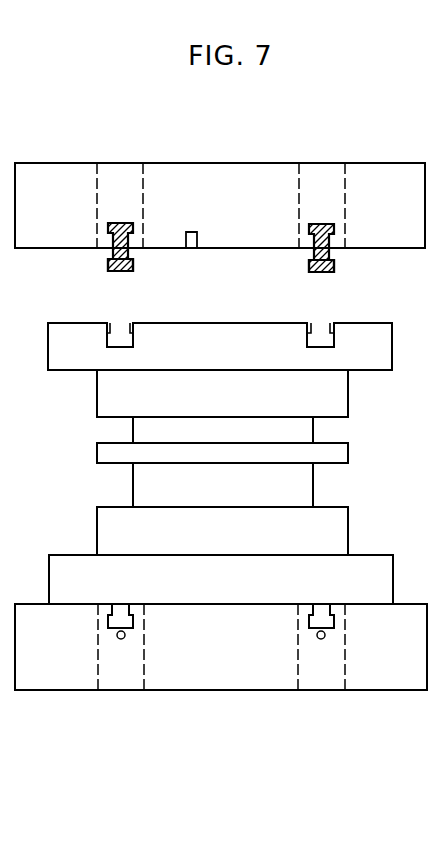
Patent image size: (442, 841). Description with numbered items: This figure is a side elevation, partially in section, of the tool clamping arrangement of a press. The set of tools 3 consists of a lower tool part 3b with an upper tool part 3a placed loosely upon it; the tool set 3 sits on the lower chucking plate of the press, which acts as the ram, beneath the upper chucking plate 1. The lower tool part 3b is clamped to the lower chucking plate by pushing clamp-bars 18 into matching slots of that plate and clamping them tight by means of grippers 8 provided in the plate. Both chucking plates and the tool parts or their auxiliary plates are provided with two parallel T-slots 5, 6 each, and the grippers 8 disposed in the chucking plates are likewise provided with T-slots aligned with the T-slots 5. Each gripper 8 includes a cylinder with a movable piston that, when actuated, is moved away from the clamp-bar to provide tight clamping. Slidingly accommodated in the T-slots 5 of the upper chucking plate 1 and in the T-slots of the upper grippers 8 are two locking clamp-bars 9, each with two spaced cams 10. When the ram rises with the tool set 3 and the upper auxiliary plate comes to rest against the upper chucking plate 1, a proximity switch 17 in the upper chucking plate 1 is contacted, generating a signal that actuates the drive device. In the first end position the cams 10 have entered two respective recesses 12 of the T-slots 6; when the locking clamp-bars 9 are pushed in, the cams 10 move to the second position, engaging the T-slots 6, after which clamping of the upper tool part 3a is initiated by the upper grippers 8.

The upper chucking plate 1 is at (396, 195).
The set of tools 3 is at (351, 455).
The upper tool part 3a is at (349, 398).
The lower tool part 3b is at (332, 537).
The T-slots 5 is at (117, 222).
The T-slots 6 is at (321, 333).
The grippers 8 is at (320, 196).
The locking clamp-bars 9 is at (335, 262).
The cams 10 is at (108, 264).
The recesses 12 is at (336, 329).
The proximity switch 17 is at (193, 235).
The clamp-bars 18 is at (334, 605).